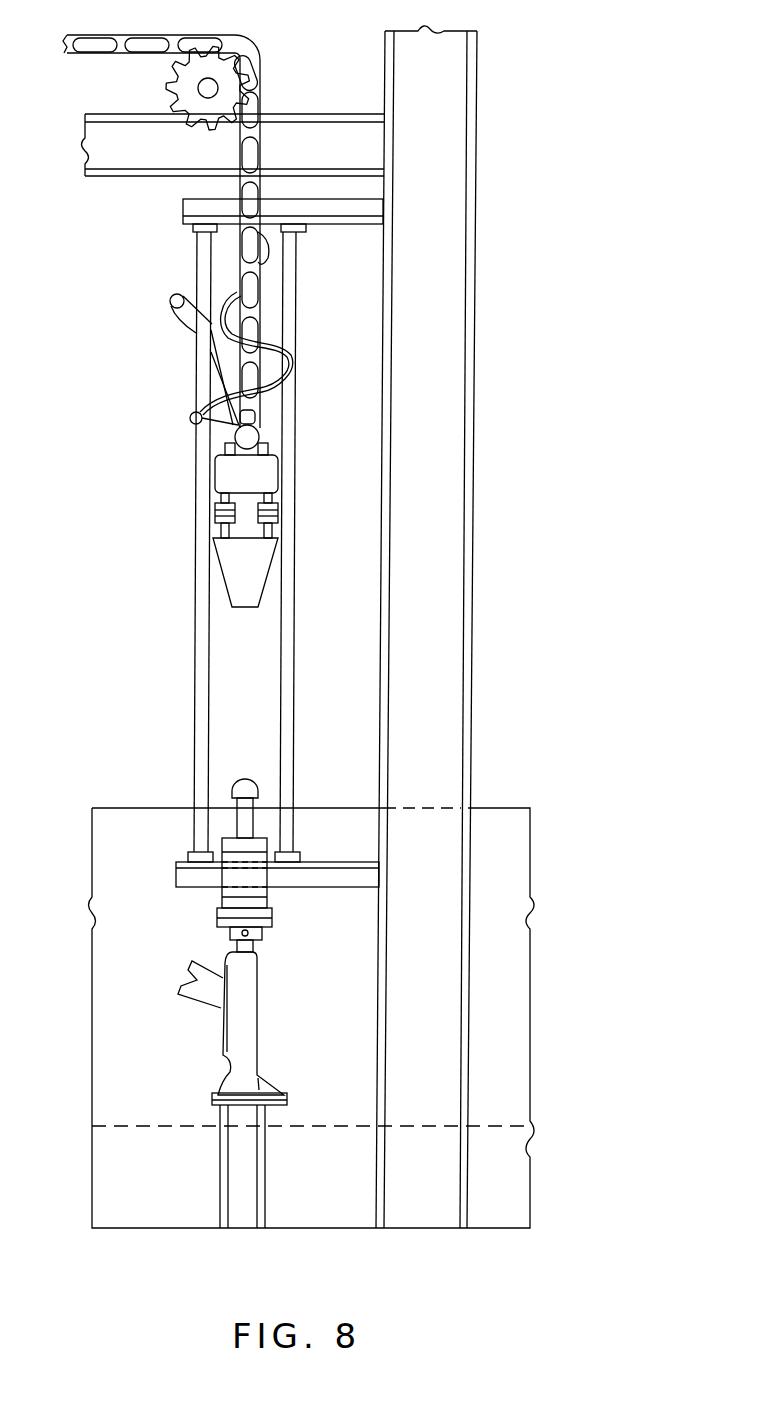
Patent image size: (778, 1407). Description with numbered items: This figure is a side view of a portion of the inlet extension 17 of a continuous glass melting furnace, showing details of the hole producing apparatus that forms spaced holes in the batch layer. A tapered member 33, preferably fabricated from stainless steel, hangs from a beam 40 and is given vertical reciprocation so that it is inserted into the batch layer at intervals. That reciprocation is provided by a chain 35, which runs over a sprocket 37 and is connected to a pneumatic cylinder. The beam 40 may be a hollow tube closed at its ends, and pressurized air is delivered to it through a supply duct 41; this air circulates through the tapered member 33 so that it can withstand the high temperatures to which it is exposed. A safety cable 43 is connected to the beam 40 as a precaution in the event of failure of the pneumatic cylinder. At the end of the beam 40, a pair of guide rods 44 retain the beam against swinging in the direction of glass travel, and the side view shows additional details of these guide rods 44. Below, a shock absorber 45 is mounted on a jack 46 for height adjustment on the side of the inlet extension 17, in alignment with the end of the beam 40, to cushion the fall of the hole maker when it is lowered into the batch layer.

The inlet extension 17 is at (138, 808).
The tapered member 33 is at (247, 600).
The chain 35 is at (143, 42).
The sprocket 37 is at (166, 88).
The beam 40 is at (220, 473).
The supply duct 41 is at (184, 333).
The safety cable 43 is at (190, 418).
The guide rod 44 is at (292, 723).
The shock absorber 45 is at (267, 890).
The jack 46 is at (247, 1020).